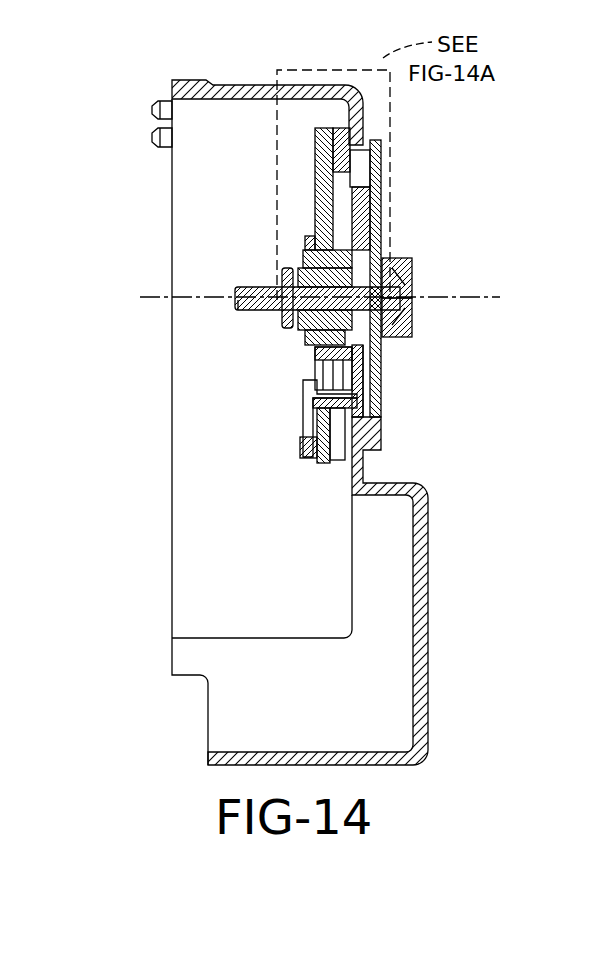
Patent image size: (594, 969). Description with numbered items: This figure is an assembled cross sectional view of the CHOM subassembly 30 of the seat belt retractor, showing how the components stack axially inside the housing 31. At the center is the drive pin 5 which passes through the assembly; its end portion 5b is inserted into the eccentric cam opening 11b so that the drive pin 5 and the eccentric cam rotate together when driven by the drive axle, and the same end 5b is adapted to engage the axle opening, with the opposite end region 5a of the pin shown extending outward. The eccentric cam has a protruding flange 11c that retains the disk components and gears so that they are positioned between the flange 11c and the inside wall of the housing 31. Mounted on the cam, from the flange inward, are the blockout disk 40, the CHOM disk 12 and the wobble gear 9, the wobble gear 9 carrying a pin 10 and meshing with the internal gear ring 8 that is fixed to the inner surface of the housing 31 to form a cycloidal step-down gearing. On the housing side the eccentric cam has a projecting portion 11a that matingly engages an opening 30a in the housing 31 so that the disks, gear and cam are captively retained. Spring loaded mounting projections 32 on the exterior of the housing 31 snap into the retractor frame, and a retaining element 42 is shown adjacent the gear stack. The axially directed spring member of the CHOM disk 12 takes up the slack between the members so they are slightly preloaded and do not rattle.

The drive pin 5 is at (228, 281).
The shaft end 5a is at (238, 304).
The end portion of the drive pin 5b is at (300, 275).
The internal gear ring 8 is at (362, 167).
The wobble gear 9 is at (357, 235).
The pin 10 is at (310, 412).
The projecting portion of the eccentric cam 11a is at (405, 305).
The eccentric cam opening 11b is at (300, 320).
The protruding flange of the eccentric cam 11c is at (310, 240).
The CHOM disk 12 is at (338, 138).
The CHOM subassembly 30 is at (359, 422).
The opening on the housing 30a is at (405, 270).
The housing 31 is at (420, 568).
The mounting projections 32 is at (150, 136).
The blockout disk 40 is at (317, 147).
The retaining clip 42 is at (323, 380).